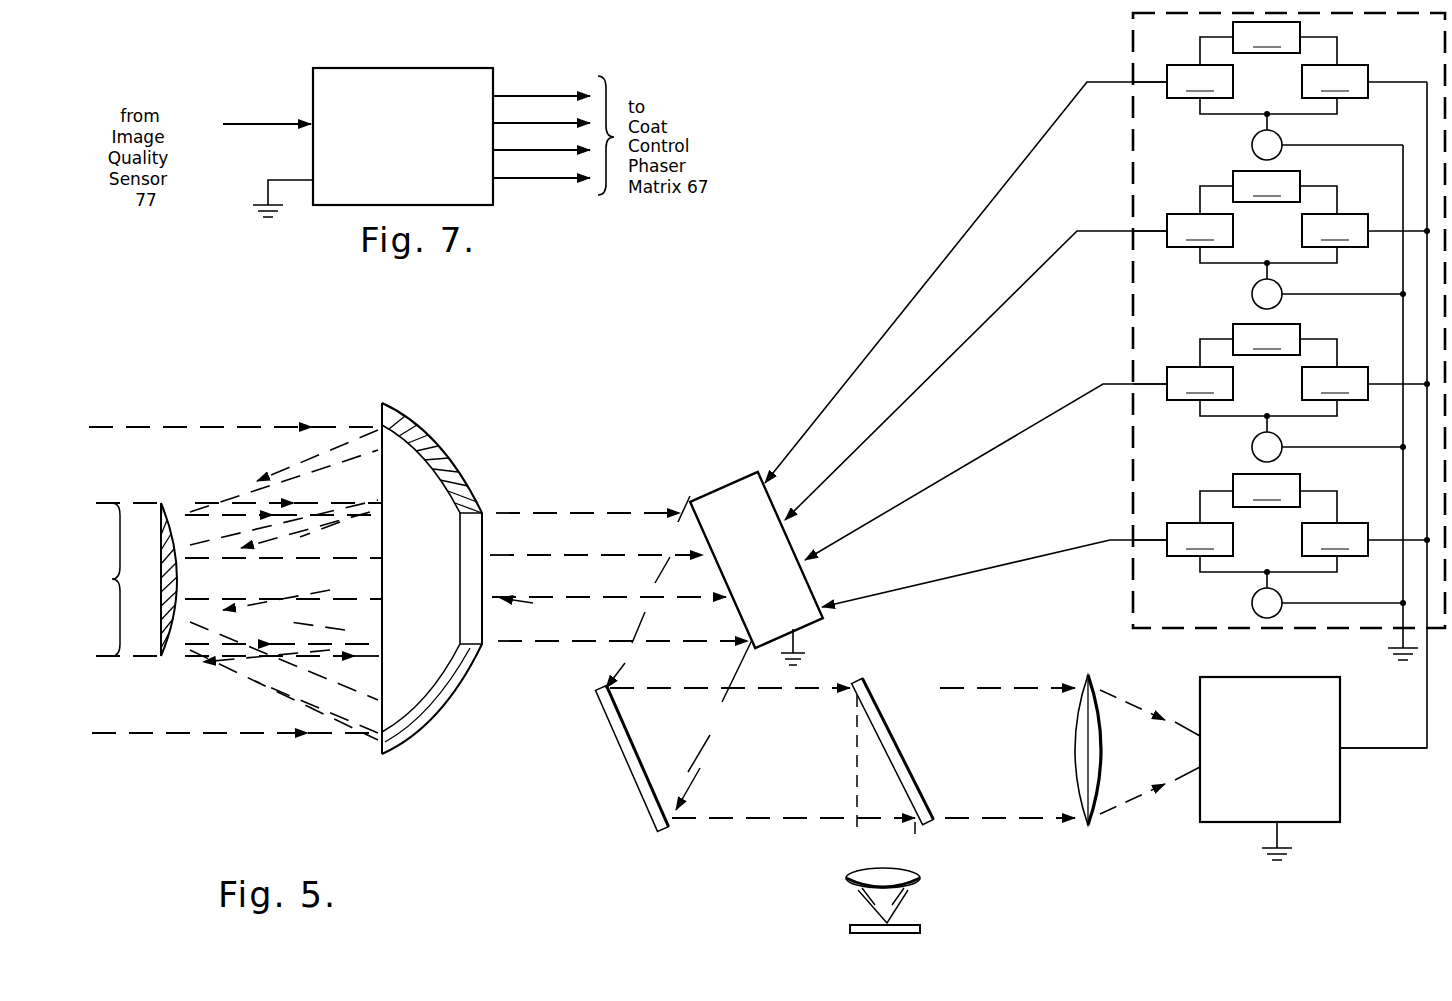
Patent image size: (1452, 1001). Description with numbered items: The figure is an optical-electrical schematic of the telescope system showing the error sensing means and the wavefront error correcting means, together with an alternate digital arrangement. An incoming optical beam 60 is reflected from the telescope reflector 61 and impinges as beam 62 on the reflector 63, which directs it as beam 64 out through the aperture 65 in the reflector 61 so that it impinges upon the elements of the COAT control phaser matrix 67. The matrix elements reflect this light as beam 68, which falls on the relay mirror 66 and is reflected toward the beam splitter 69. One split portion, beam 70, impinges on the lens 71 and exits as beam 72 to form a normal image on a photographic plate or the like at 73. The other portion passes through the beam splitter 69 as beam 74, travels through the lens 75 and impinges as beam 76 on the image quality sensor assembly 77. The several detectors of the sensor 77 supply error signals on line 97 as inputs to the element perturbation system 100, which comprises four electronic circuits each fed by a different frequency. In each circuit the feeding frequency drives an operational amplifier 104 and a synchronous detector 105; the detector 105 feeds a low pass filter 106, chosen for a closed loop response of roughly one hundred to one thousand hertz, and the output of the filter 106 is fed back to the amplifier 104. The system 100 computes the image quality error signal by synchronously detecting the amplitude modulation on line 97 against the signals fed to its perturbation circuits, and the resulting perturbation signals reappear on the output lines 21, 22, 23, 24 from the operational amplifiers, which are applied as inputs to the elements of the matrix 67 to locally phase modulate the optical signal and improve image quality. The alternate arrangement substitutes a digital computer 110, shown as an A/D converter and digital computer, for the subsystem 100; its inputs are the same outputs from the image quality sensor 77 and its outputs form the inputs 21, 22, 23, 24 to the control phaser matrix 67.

In FIG. 7, the output line 21 is at (525, 92).
In FIG. 5, the output line 21 is at (960, 238).
In FIG. 7, the output line 22 is at (522, 120).
In FIG. 5, the output line 22 is at (938, 371).
In FIG. 7, the output line 23 is at (518, 148).
In FIG. 5, the output line 23 is at (975, 462).
In FIG. 7, the output line 24 is at (517, 176).
In FIG. 5, the output line 24 is at (970, 573).
In FIG. 5, the optical beam 60 is at (107, 428).
In FIG. 5, the telescope reflector 61 is at (432, 455).
In FIG. 5, the beam 62 is at (287, 467).
In FIG. 5, the reflector 63 is at (187, 555).
In FIG. 5, the beam 64 is at (346, 513).
In FIG. 5, the aperture 65 is at (533, 603).
In FIG. 5, the relay mirror 66 is at (650, 800).
In FIG. 5, the COAT control phaser matrix 67 is at (716, 497).
In FIG. 5, the beam 68 is at (642, 624).
In FIG. 5, the beam splitter 69 is at (865, 681).
In FIG. 5, the beam 70 is at (915, 868).
In FIG. 5, the lens 71 is at (843, 883).
In FIG. 5, the beam 72 is at (895, 920).
In FIG. 5, the photographic plate 73 is at (850, 928).
In FIG. 5, the beam 74 is at (980, 688).
In FIG. 5, the lens 75 is at (1093, 677).
In FIG. 5, the beam 76 is at (1180, 773).
In FIG. 5, the image quality sensor assembly 77 is at (1335, 812).
In FIG. 7, the output line 97 is at (284, 122).
In FIG. 5, the output line 97 is at (1427, 700).
In FIG. 5, the element perturbation system 100 is at (1133, 40).
In FIG. 5, the operational amplifier 104 is at (1200, 310).
In FIG. 5, the synchronous detector 105 is at (1335, 310).
In FIG. 5, the low pass filter 106 is at (1266, 264).
In FIG. 7, the digital computer 110 is at (442, 70).